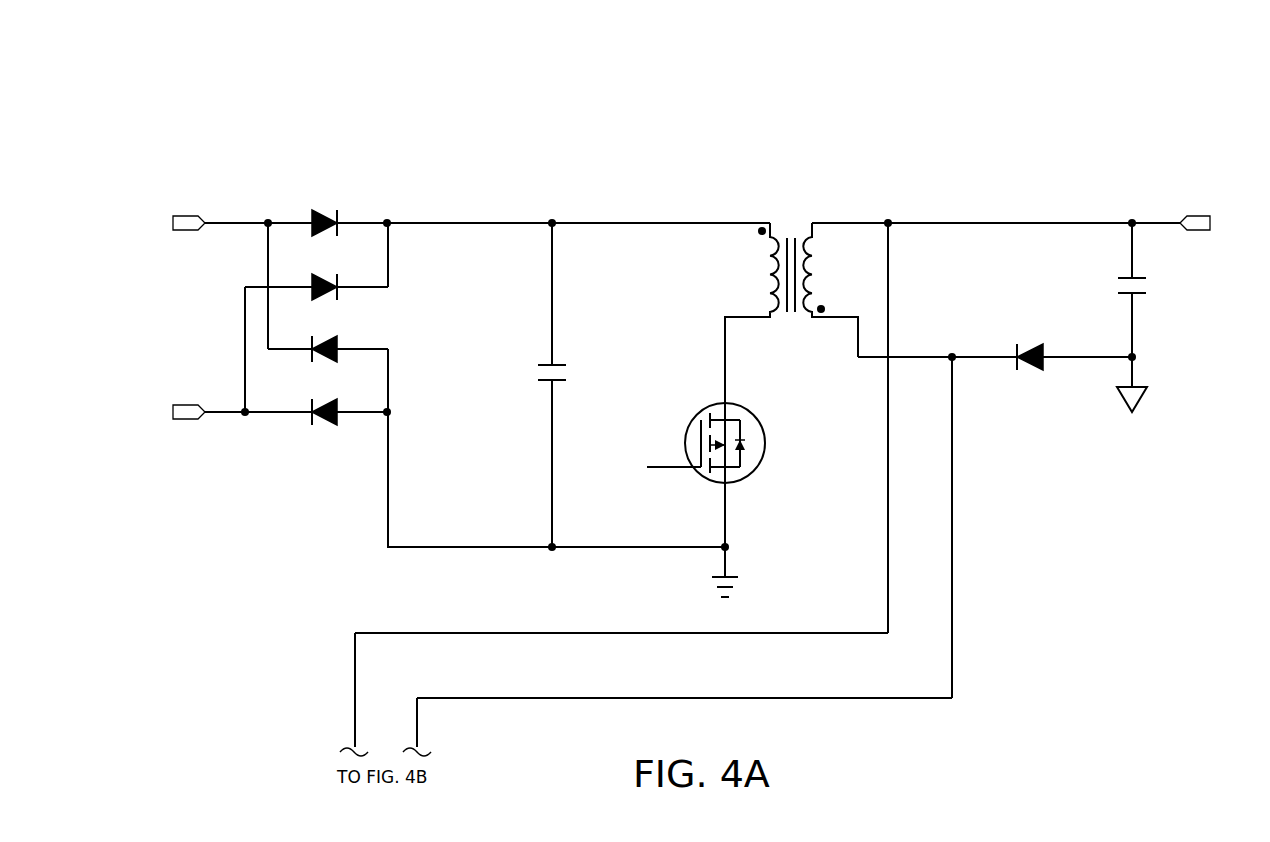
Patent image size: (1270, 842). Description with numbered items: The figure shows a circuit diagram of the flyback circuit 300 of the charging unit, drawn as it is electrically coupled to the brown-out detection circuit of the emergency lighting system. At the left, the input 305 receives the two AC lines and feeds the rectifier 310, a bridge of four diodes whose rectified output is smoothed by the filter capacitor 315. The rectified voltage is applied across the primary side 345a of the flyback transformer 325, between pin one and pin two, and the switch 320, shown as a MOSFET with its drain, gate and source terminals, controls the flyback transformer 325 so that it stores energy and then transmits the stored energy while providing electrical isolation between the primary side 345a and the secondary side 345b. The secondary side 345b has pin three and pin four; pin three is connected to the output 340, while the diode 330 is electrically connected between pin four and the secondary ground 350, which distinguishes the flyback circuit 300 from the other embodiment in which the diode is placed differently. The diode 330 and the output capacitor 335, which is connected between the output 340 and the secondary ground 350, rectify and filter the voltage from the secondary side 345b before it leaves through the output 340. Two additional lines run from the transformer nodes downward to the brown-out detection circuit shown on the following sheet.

The flyback circuit 300 is at (209, 108).
The input 305 is at (167, 322).
The rectifier 310 is at (287, 197).
The filter capacitor 315 is at (526, 370).
The switch 320 is at (760, 463).
The flyback transformer 325 is at (771, 171).
The primary side 345a is at (747, 263).
The secondary side 345b is at (836, 261).
The diode 330 is at (1043, 349).
The output capacitor 335 is at (1172, 295).
The output 340 is at (1198, 212).
The secondary ground 350 is at (1113, 371).